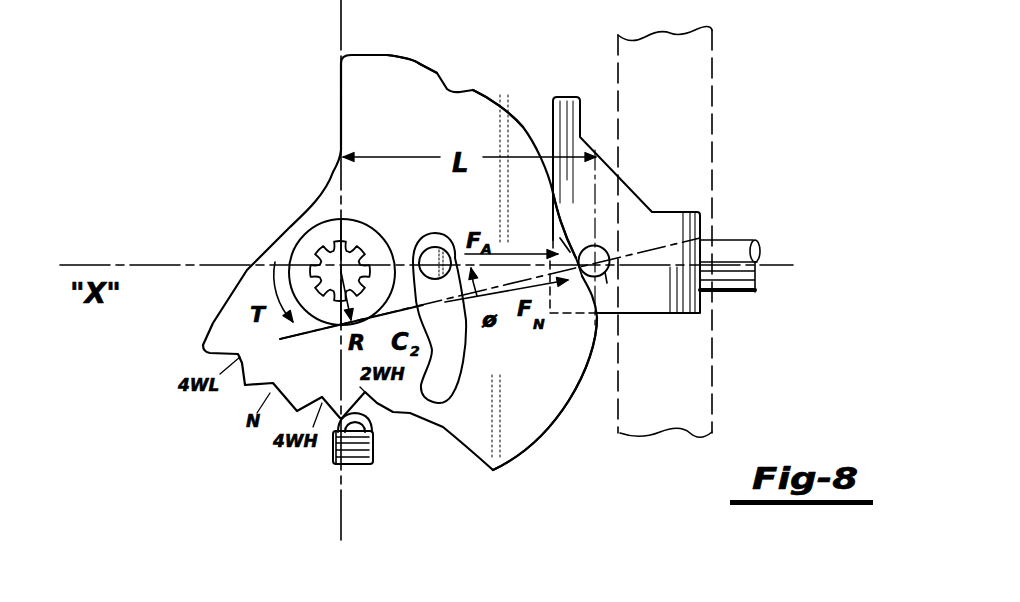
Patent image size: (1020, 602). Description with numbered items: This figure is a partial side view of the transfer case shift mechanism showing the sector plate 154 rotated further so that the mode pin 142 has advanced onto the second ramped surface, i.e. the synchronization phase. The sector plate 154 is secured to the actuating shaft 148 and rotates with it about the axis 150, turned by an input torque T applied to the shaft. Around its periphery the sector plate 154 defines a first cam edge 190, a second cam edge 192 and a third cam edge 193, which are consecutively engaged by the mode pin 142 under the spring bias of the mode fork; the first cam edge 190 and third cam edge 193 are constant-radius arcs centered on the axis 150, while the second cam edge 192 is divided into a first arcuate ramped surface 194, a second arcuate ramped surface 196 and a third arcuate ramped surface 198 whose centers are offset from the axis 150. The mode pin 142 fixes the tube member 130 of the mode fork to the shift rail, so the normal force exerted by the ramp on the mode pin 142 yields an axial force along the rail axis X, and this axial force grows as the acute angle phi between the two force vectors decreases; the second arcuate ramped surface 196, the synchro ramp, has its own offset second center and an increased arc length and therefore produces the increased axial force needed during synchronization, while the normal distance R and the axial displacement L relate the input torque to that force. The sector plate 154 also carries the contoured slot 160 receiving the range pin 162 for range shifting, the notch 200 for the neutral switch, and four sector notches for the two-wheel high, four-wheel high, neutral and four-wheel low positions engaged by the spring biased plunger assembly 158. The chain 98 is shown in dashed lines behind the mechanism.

The chain 98 is at (698, 102).
The tube member 130 is at (632, 192).
The mode pin 142 is at (609, 246).
The actuating shaft 148 is at (330, 252).
The axis 150 is at (353, 246).
The sector plate 154 is at (316, 173).
The spring biased plunger assembly 158 is at (374, 441).
The contoured slot 160 is at (460, 337).
The range pin 162 is at (422, 251).
The first cam edge 190 is at (496, 98).
The second cam edge 192 is at (575, 228).
The third cam edge 193 is at (577, 386).
The first arcuate ramped surface 194 is at (561, 241).
The second arcuate ramped surface 196 is at (570, 252).
The third arcuate ramped surface 198 is at (597, 297).
The notch 200 is at (436, 77).